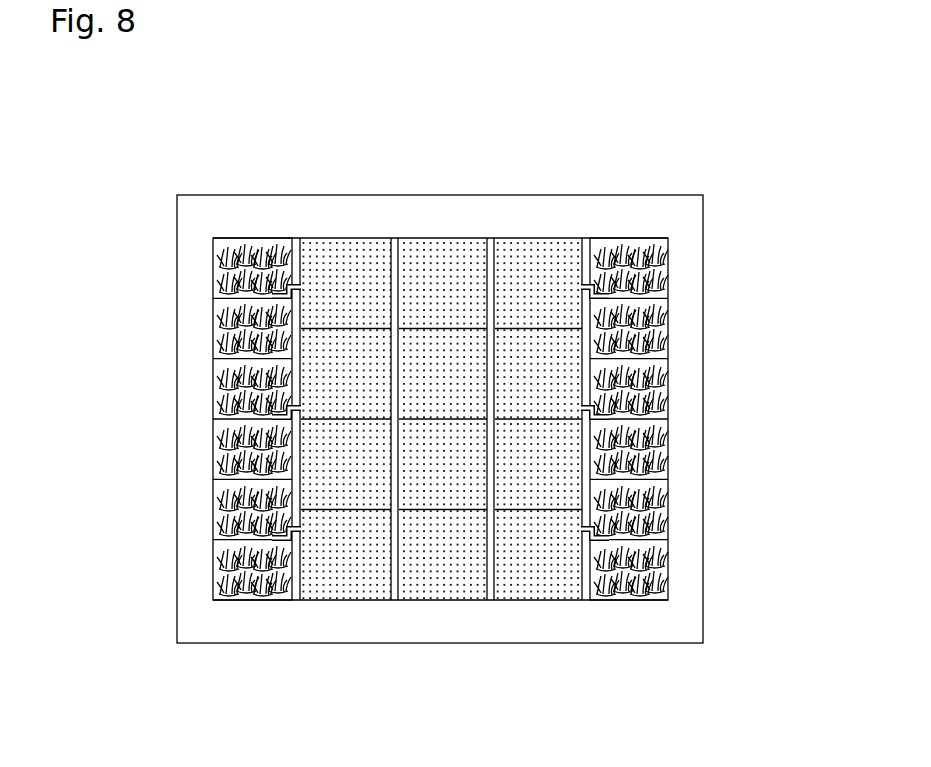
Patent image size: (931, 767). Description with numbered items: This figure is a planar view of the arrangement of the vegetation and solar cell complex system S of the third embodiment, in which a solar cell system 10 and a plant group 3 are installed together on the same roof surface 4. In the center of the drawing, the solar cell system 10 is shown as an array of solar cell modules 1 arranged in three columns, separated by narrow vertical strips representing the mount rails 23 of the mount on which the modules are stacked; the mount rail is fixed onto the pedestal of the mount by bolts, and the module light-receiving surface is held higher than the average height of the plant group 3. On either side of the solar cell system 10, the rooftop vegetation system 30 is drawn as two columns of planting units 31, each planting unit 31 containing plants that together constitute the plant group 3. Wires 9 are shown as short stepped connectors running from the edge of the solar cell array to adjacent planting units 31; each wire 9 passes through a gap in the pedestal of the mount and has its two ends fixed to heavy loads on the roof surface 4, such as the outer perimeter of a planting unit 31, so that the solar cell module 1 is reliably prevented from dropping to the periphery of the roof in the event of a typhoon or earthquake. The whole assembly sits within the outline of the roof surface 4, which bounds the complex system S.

The vegetation and solar cell complex system S is at (680, 145).
The solar cell module 1 is at (522, 590).
The plant group 3 is at (225, 328).
The roof surface 4 is at (690, 393).
The wire 9 is at (581, 287).
The solar cell system 10 is at (462, 223).
The mount rail 23 is at (396, 238).
The rooftop vegetation system 30 is at (688, 257).
The planting unit 31 is at (213, 368).